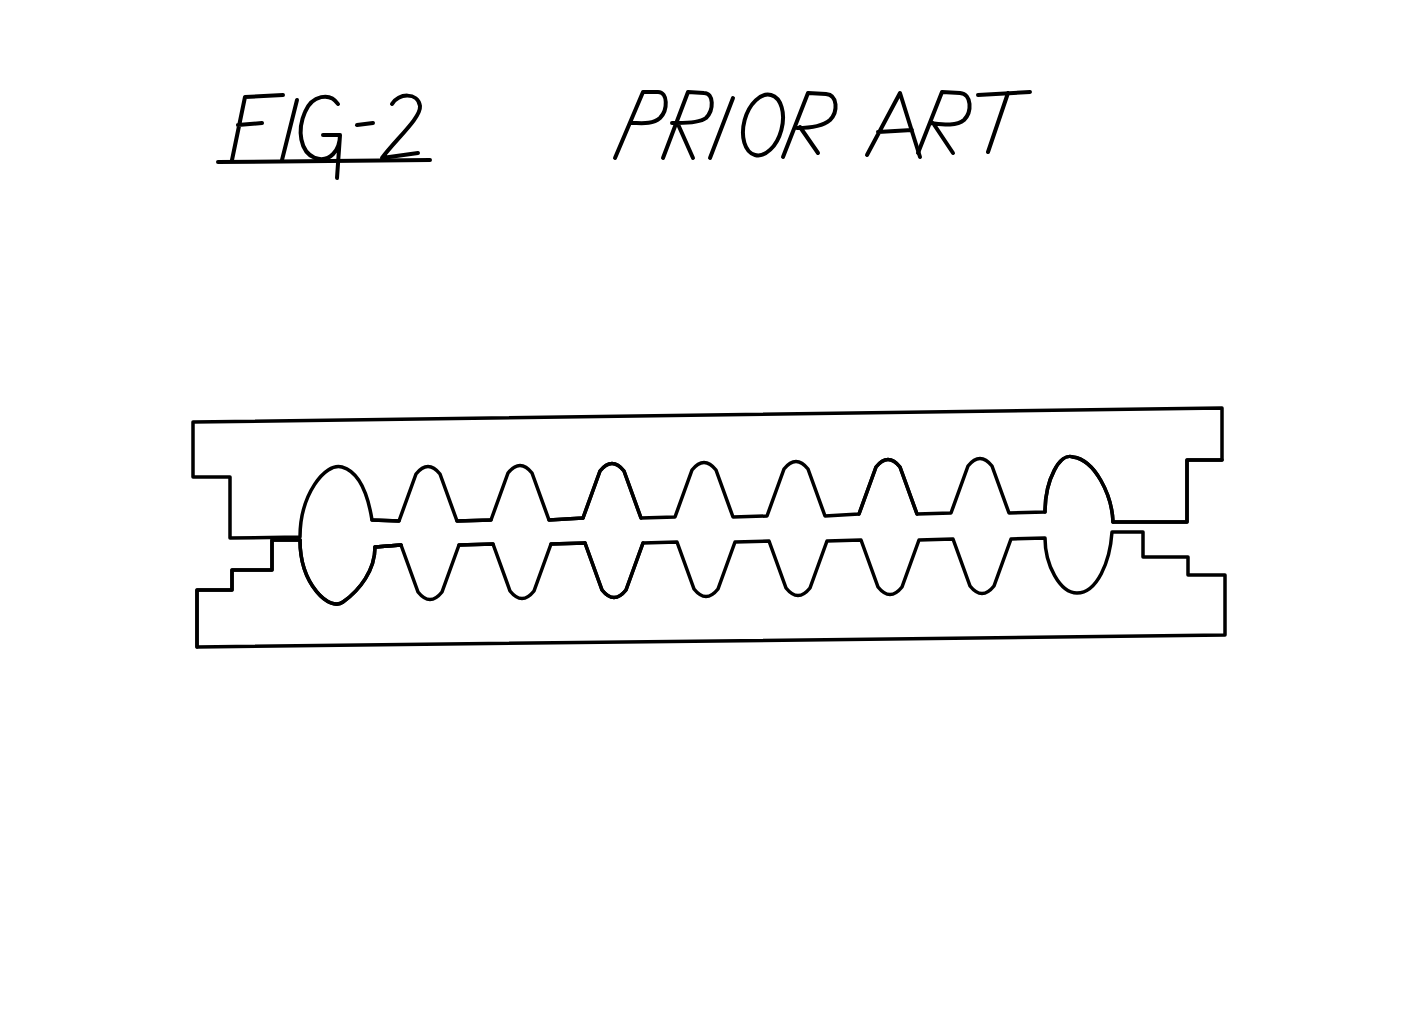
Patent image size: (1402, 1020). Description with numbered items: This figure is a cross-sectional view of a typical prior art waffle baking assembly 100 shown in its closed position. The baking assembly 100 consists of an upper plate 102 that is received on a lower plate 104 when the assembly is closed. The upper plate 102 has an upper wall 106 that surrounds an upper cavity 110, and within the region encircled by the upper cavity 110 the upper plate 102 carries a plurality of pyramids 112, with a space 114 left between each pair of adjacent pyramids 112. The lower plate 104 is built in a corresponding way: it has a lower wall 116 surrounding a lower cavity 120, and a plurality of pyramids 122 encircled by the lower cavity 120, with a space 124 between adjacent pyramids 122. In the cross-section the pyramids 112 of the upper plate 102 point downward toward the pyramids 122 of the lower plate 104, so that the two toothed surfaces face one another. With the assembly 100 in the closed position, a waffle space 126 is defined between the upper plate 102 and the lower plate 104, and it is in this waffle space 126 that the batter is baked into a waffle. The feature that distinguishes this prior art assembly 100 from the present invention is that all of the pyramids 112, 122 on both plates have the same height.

The baking assembly 100 is at (790, 322).
The upper plate 102 is at (847, 408).
The lower plate 104 is at (722, 647).
The upper wall 106 is at (1190, 510).
The upper cavity 110 is at (1097, 478).
The pyramids 112 is at (575, 515).
The space 114 is at (628, 478).
The lower wall 116 is at (272, 553).
The lower cavity 120 is at (352, 602).
The pyramids 122 is at (577, 545).
The space 124 is at (628, 598).
The waffle space 126 is at (892, 510).